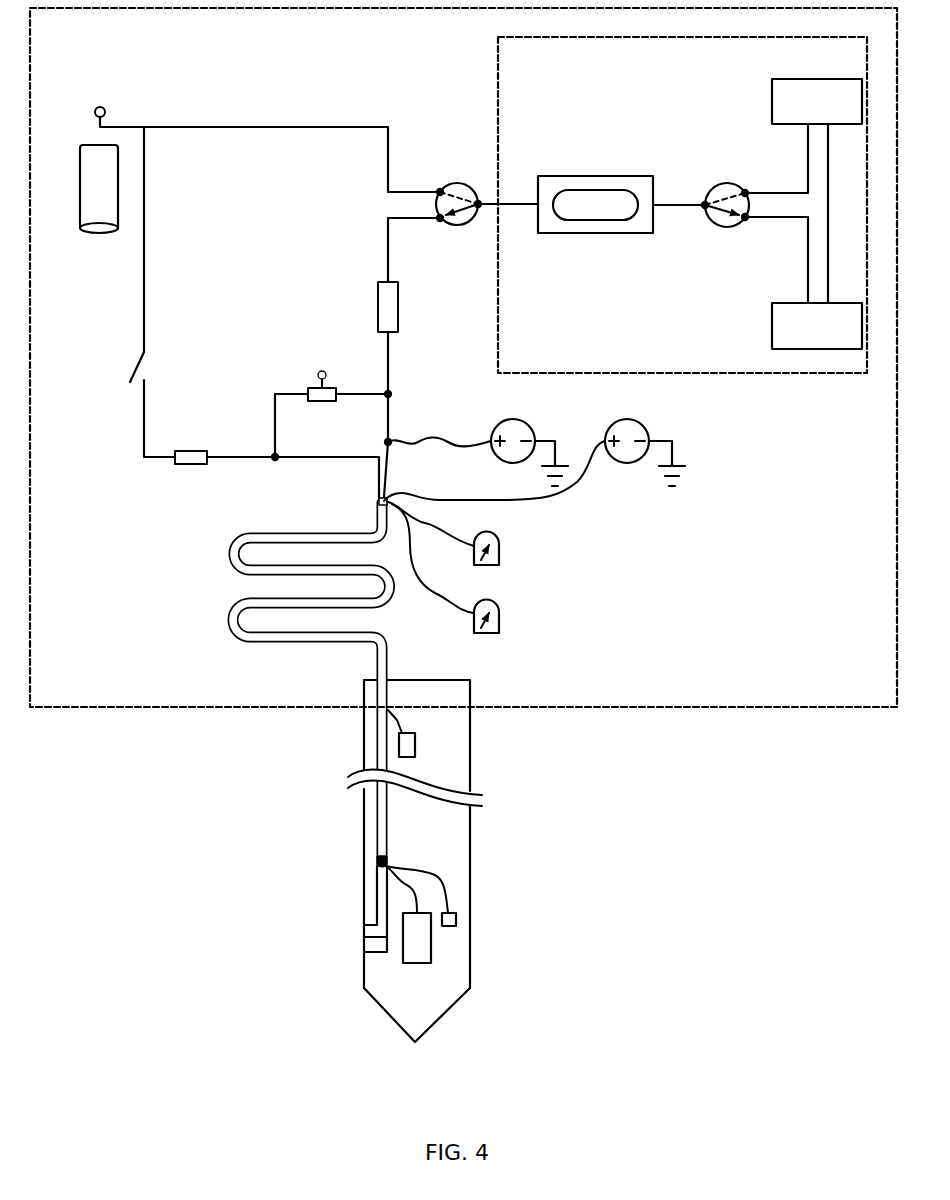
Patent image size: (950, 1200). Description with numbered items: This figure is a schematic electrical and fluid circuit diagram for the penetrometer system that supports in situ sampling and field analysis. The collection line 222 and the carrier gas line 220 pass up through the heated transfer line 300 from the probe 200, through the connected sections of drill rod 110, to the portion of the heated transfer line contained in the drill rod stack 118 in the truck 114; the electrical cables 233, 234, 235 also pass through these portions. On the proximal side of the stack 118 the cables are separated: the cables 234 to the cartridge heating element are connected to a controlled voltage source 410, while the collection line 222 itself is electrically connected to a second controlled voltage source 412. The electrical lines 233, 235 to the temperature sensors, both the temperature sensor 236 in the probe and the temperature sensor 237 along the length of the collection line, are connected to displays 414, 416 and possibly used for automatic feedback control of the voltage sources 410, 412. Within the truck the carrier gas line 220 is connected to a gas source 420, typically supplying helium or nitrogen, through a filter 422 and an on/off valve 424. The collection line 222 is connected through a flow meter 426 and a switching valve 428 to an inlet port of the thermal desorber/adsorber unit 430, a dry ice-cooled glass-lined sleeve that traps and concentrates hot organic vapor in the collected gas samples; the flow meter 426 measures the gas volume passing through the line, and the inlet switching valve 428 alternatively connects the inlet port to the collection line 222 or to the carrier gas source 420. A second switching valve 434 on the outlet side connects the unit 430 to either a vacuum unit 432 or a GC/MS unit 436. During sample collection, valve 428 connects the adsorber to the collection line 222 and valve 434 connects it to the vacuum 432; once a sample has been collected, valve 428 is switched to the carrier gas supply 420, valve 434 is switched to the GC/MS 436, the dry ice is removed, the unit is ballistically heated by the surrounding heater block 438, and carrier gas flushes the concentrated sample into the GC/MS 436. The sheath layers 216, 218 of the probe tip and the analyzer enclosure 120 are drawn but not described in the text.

The drill rod 110 is at (470, 771).
The truck 114 is at (818, 709).
The drill rod stack 118 is at (200, 587).
The analyzer unit 120 is at (818, 375).
The probe 200 is at (470, 966).
The outer sheath 216 is at (364, 952).
The inner sheath 218 is at (364, 925).
The carrier gas line 220 is at (378, 498).
The collection line 222 is at (389, 418).
The electrical line 233 is at (436, 523).
The cables 234 is at (437, 496).
The electrical line 235 is at (452, 611).
The temperature sensor 236 is at (457, 918).
The temperature sensor 237 is at (415, 743).
The heated transfer line 300 is at (382, 817).
The controlled voltage source 410 is at (658, 426).
The second controlled voltage source 412 is at (522, 426).
The display 414 is at (499, 561).
The display 416 is at (499, 628).
The gas source 420 is at (103, 236).
The filter 422 is at (197, 451).
The on/off valve 424 is at (150, 373).
The flow meter 426 is at (398, 302).
The switching valve 428 is at (453, 228).
The thermal desorber/adsorber unit 430 is at (583, 170).
The vacuum unit 432 is at (772, 336).
The second switching valve 434 is at (718, 229).
The gas chromatographer/mass spectrometer (GC/MS) unit 436 is at (772, 90).
The heater block 438 is at (640, 176).